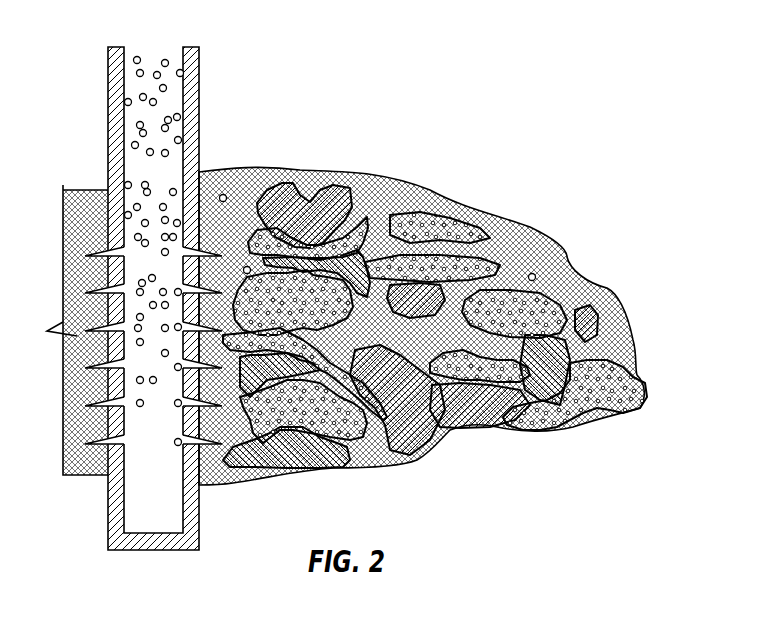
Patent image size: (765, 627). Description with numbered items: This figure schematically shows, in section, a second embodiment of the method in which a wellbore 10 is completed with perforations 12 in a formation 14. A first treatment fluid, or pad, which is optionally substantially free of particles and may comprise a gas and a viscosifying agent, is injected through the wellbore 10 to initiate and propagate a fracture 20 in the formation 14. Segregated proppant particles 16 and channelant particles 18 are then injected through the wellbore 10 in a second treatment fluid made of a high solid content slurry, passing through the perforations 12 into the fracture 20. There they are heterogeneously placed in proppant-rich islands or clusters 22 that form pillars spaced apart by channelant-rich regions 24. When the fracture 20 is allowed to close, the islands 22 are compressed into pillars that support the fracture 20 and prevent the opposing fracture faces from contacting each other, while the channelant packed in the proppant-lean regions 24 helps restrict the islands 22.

The wellbore 10 is at (183, 87).
The perforations 12 is at (203, 249).
The formation 14 is at (393, 100).
The proppant particles 16 is at (137, 73).
The channelant particles 18 is at (142, 183).
The fracture 20 is at (482, 205).
The proppant-rich islands or clusters 22 is at (532, 310).
The channelant-rich regions 24 is at (582, 332).